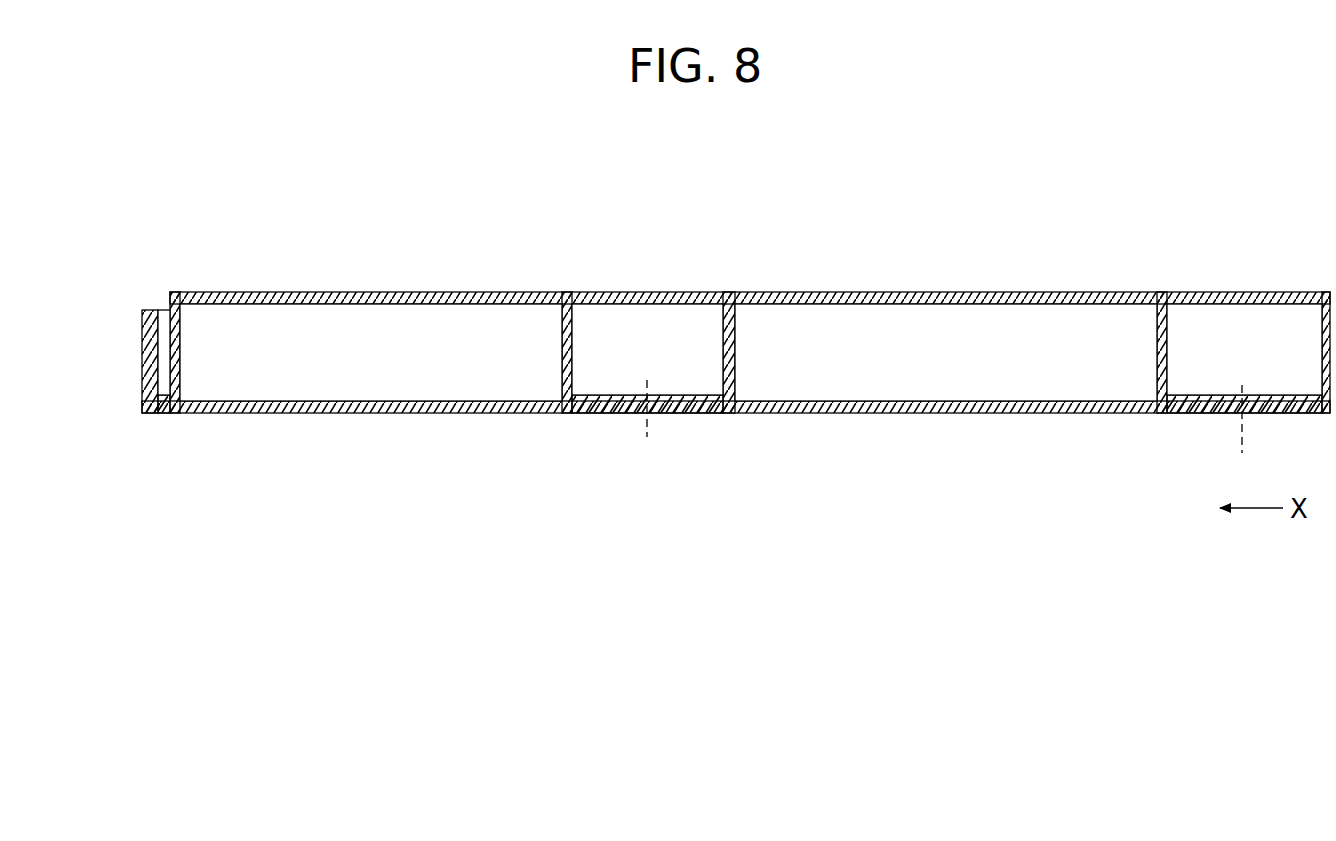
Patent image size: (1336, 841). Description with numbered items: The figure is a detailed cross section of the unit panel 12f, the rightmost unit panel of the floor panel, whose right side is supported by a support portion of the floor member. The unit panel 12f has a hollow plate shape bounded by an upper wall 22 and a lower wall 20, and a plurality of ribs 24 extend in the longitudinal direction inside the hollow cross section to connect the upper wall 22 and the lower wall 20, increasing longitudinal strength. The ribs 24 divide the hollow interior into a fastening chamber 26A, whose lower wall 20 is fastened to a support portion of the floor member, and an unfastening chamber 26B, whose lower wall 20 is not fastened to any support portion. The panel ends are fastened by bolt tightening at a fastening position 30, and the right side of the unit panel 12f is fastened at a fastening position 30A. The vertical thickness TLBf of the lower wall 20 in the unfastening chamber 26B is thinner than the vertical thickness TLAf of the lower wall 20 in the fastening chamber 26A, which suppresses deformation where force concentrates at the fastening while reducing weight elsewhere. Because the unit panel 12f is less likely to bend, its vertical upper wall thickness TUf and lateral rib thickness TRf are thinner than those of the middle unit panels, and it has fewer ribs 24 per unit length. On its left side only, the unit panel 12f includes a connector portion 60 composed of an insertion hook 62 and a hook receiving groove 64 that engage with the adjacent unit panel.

The unit panel 12f is at (291, 230).
The lower wall 20 is at (882, 422).
The upper wall 22 is at (824, 288).
The rib 24 is at (562, 330).
The fastening chamber 26A is at (607, 355).
The unfastening chamber 26B is at (415, 362).
The fastening position 30 is at (648, 423).
The fastening position 30A is at (1250, 435).
The connector portion 60 is at (159, 278).
The insertion hook 62 is at (142, 355).
The hook receiving groove 64 is at (169, 324).
The vertical thickness of upper wall TUf is at (321, 326).
The vertical thickness of lower wall of unfastening chamber TLBf is at (233, 375).
The vertical thickness of lower wall of fastening chamber TLAf is at (690, 375).
The lateral thickness of rib TRf is at (700, 353).